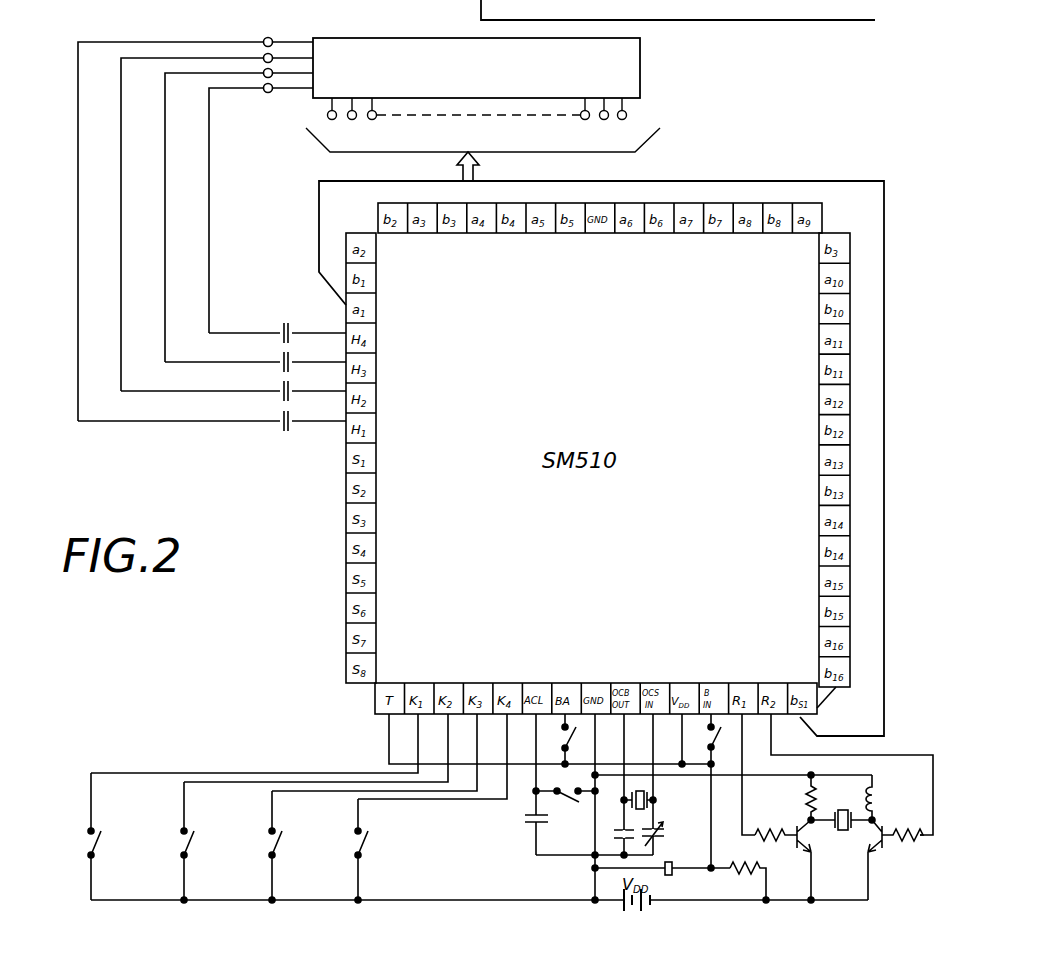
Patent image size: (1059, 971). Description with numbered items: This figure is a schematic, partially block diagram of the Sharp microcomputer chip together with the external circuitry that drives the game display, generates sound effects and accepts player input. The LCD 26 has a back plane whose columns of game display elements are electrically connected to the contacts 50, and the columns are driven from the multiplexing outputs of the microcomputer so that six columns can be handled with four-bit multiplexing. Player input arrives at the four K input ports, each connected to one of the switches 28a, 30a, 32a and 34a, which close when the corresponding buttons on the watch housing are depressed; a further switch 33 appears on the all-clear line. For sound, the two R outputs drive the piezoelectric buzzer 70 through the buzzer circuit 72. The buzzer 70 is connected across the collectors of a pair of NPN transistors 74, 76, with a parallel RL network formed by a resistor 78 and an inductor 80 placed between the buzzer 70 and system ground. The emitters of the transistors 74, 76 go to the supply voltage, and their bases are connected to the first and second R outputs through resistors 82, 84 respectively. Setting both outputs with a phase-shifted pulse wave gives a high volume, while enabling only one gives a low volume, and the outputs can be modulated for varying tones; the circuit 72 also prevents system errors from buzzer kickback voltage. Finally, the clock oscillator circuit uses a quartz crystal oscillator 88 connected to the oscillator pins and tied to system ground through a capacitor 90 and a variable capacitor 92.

The LCD 26 is at (483, 95).
The contacts 50 is at (322, 66).
The switch 28a is at (88, 846).
The switch 30a is at (181, 846).
The switch 32a is at (269, 846).
The switch 34a is at (355, 846).
The all clear switch with capacitor 33 is at (560, 798).
The quartz crystal oscillator 88 is at (646, 790).
The capacitor 90 is at (612, 834).
The variable capacitor 92 is at (658, 840).
The resistor 78 is at (808, 800).
The resistor 82 is at (770, 833).
The NPN transistor 74 is at (797, 842).
The piezoelectric buzzer 70 is at (840, 812).
The inductor 80 is at (880, 798).
The buzzer circuit 72 is at (906, 798).
The resistor 84 is at (915, 840).
The NPN transistor 76 is at (880, 854).